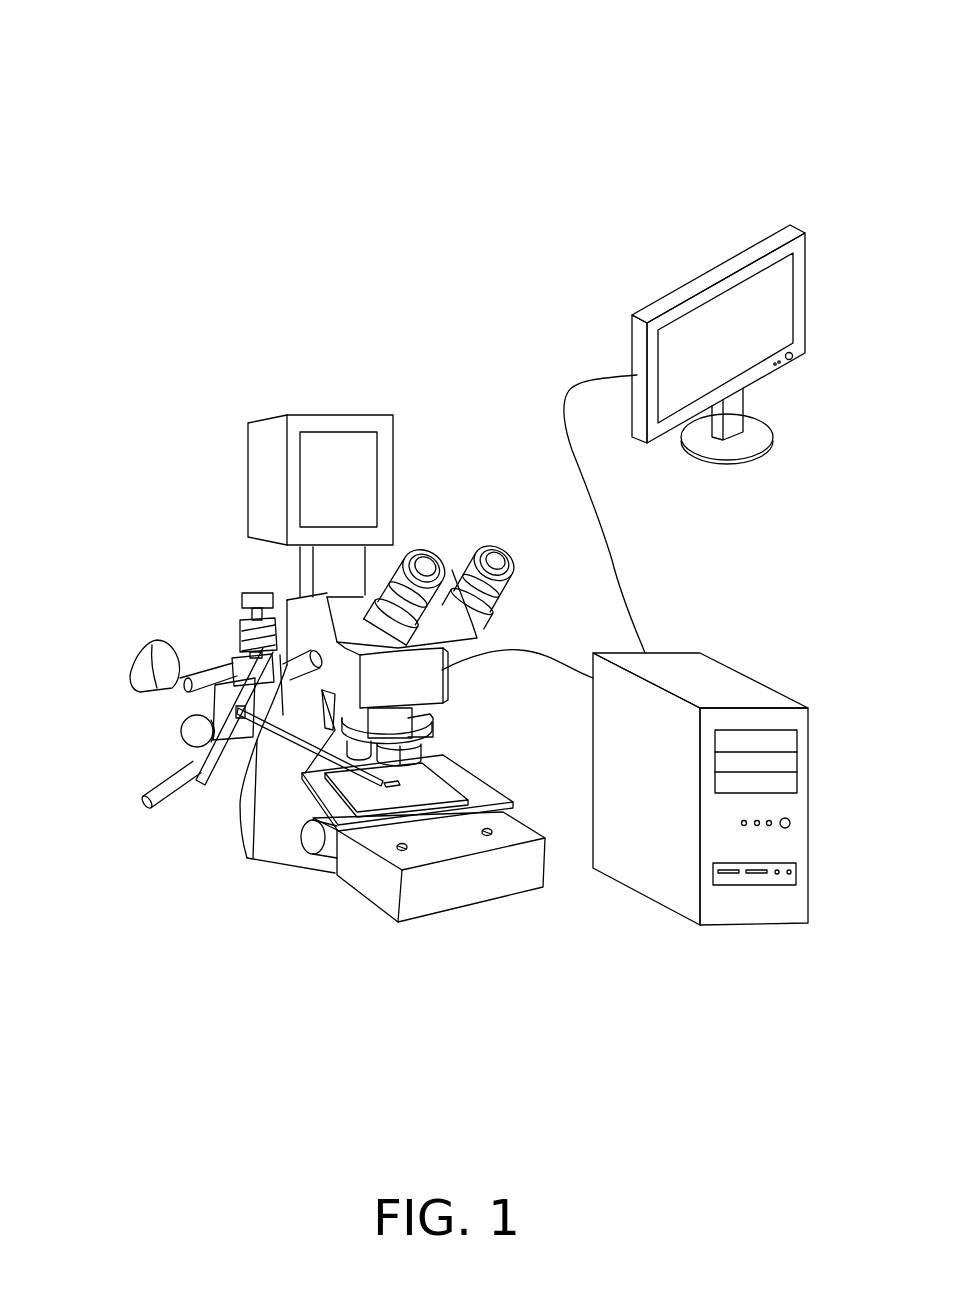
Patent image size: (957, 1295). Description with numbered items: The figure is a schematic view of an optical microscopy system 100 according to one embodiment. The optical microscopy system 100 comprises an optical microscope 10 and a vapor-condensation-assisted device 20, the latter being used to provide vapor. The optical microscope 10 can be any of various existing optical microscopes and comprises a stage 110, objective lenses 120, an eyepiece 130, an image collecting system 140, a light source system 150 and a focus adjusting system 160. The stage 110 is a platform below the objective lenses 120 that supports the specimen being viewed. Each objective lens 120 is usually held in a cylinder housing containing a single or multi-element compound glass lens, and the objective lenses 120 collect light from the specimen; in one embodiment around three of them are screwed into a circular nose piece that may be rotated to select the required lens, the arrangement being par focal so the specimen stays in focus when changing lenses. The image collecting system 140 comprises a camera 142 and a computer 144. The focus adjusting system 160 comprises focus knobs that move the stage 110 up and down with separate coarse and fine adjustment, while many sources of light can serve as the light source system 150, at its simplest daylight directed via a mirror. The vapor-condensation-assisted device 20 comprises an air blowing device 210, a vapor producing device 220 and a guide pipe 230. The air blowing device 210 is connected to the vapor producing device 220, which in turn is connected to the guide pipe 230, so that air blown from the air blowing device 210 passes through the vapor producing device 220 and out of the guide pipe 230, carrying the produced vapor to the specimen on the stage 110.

The optical microscopy system 100 is at (415, 72).
The optical microscope 10 is at (498, 622).
The vapor-condensation-assisted device 20 is at (137, 698).
The stage 110 is at (484, 788).
The objective lenses 120 is at (386, 753).
The eyepiece 130 is at (430, 545).
The image collecting system 140 is at (541, 312).
The camera 142 is at (358, 425).
The computer 144 is at (630, 357).
The light source system 150 is at (483, 880).
The focus adjusting system 160 is at (428, 678).
The air blowing device 210 is at (148, 660).
The vapor producing device 220 is at (253, 730).
The guide pipe 230 is at (258, 833).